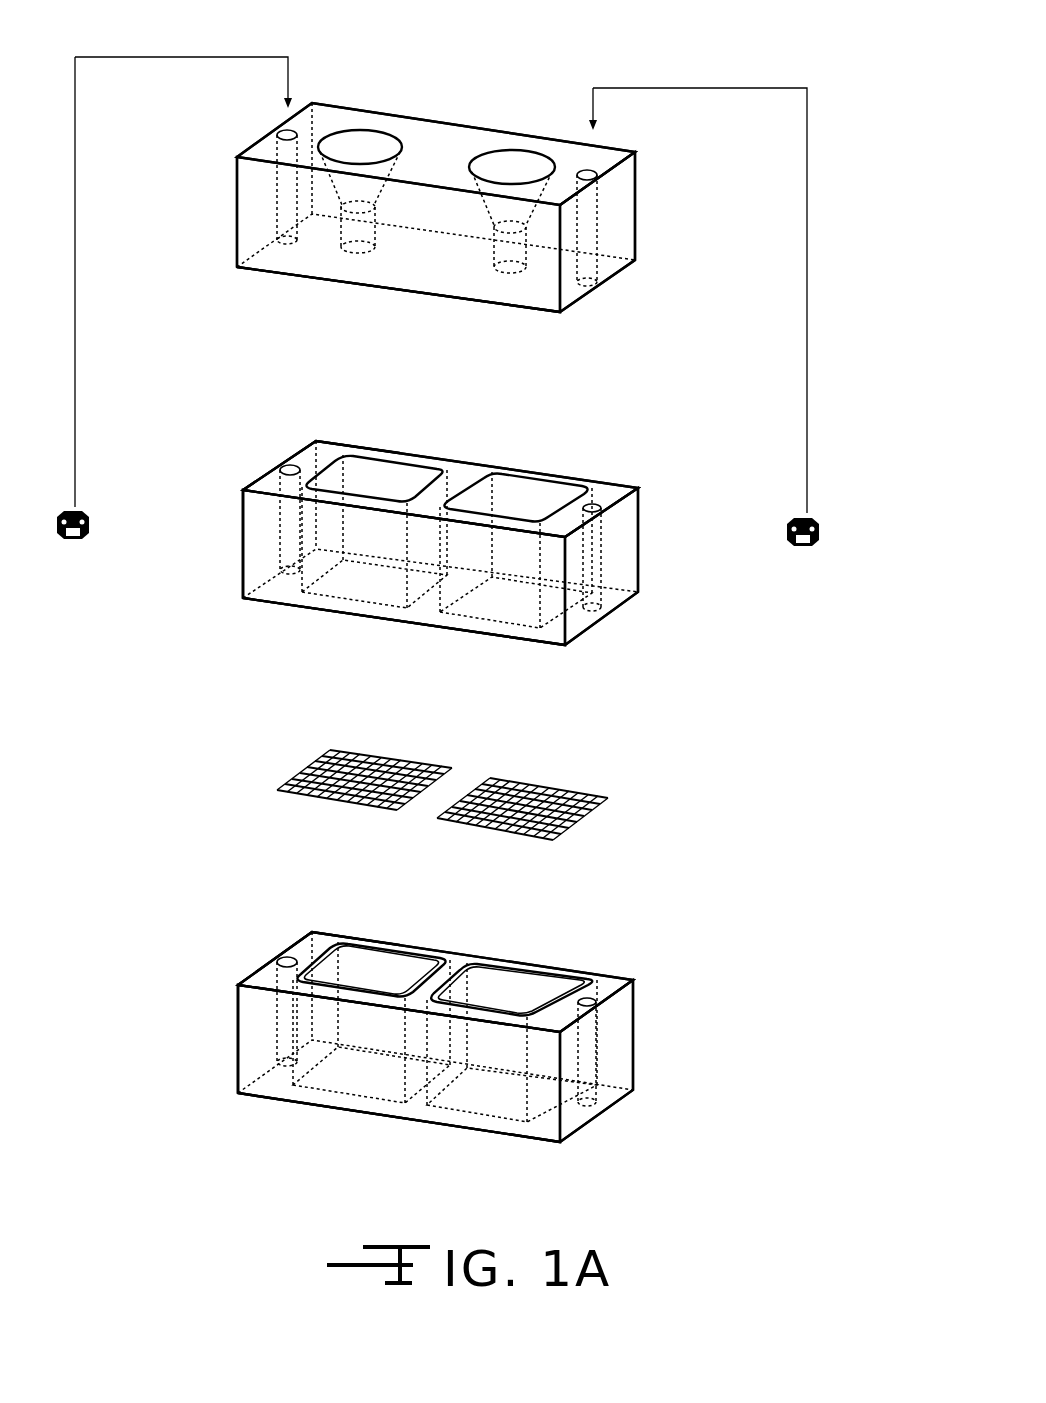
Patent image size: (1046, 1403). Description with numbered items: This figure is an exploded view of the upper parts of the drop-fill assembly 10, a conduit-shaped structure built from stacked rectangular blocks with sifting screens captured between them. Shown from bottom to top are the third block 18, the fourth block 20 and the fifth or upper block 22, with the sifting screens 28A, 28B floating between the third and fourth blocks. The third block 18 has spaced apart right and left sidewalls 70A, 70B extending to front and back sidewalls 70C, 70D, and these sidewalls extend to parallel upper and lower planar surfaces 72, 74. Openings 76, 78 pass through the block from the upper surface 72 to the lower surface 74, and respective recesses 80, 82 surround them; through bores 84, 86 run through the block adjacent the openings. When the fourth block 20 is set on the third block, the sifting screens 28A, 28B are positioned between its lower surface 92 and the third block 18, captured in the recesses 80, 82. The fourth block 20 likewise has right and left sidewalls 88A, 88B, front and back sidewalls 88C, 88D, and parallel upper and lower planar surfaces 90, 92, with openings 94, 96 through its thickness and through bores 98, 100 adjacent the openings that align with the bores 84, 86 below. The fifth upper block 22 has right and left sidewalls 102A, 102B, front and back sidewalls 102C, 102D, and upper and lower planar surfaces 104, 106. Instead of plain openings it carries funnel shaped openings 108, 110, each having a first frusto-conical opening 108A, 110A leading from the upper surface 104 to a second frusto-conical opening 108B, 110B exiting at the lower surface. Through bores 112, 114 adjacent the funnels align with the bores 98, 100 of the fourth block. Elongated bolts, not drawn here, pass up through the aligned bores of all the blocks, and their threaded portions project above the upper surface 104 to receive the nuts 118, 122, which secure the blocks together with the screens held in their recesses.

The drop-fill assembly 10 is at (724, 26).
The third block 18 is at (174, 1024).
The fourth block 20 is at (196, 509).
The fifth or upper block 22 is at (214, 194).
The sifting screen 28A is at (367, 753).
The sifting screen 28B is at (518, 780).
The right sidewall 70A is at (613, 1030).
The left sidewall 70B is at (237, 1008).
The front sidewall 70C is at (280, 1090).
The back sidewall 70D is at (327, 935).
The upper planar surface 72 is at (254, 972).
The lower planar surface 74 is at (253, 1106).
The opening 76 is at (517, 983).
The opening 78 is at (410, 962).
The recess 80 is at (547, 1013).
The recess 82 is at (278, 975).
The through bore 84 is at (600, 1097).
The through bore 86 is at (277, 1033).
The right sidewall 88A is at (625, 527).
The left sidewall 88B is at (242, 563).
The front sidewall 88C is at (285, 607).
The back sidewall 88D is at (600, 478).
The upper planar surface 90 is at (329, 434).
The lower planar surface 92 is at (352, 623).
The opening 94 is at (505, 487).
The opening 96 is at (377, 472).
The through bore 98 is at (610, 608).
The through bore 100 is at (258, 472).
The right sidewall 102A is at (623, 205).
The left sidewall 102B is at (237, 165).
The front sidewall 102C is at (332, 270).
The back sidewall 102D is at (468, 125).
The upper planar surface 104 is at (333, 105).
The lower planar surface 106 is at (276, 278).
The funnel shaped opening 108 is at (522, 170).
The first frusto-conical opening 108A is at (557, 187).
The second frusto-conical opening 108B is at (533, 258).
The funnel shaped opening 110 is at (348, 140).
The first frusto-conical opening 110A is at (393, 170).
The second frusto-conical opening 110B is at (383, 232).
The through bore 112 is at (615, 268).
The through bore 114 is at (308, 213).
The nut 118 is at (817, 538).
The nut 122 is at (62, 537).